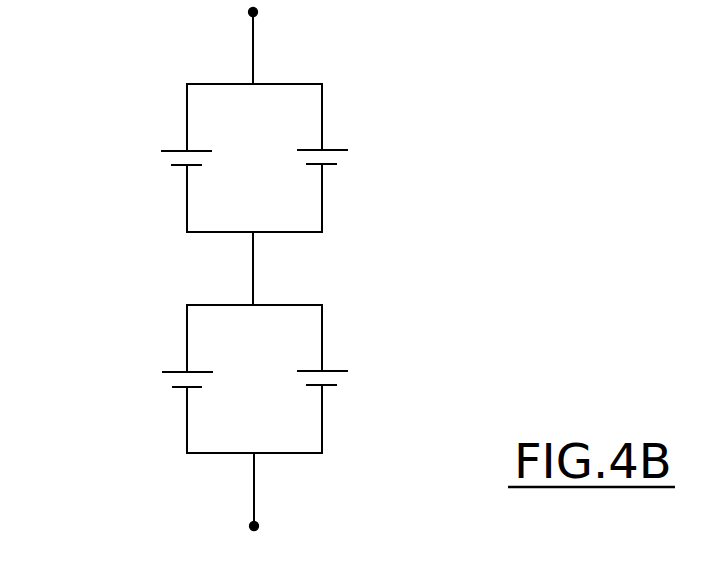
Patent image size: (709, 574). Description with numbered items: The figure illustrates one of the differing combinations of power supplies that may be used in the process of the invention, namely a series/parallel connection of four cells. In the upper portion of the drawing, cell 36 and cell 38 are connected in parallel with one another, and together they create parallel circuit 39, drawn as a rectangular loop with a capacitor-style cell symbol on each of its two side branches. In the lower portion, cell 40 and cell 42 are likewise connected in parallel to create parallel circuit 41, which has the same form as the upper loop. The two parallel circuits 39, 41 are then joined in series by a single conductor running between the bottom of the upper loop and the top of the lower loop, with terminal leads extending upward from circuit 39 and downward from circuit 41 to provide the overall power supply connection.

The cell 36 is at (172, 150).
The cell 38 is at (333, 149).
The parallel circuit 39 is at (292, 158).
The cell 40 is at (177, 372).
The parallel circuit 41 is at (284, 379).
The cell 42 is at (333, 371).